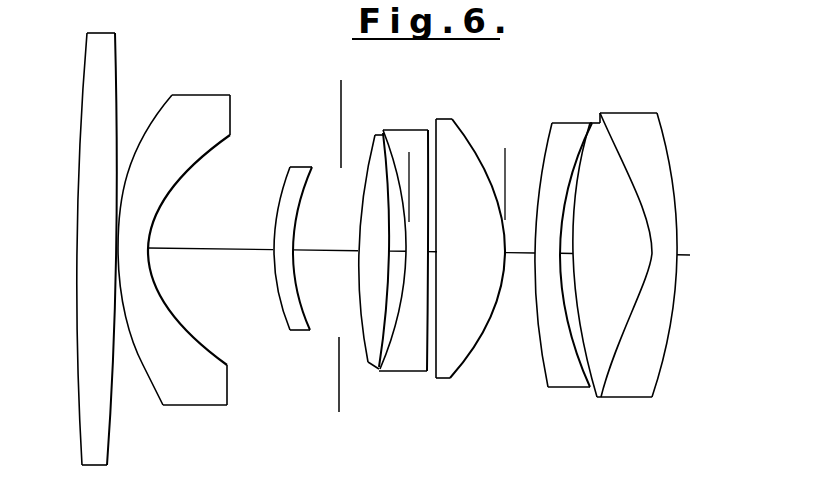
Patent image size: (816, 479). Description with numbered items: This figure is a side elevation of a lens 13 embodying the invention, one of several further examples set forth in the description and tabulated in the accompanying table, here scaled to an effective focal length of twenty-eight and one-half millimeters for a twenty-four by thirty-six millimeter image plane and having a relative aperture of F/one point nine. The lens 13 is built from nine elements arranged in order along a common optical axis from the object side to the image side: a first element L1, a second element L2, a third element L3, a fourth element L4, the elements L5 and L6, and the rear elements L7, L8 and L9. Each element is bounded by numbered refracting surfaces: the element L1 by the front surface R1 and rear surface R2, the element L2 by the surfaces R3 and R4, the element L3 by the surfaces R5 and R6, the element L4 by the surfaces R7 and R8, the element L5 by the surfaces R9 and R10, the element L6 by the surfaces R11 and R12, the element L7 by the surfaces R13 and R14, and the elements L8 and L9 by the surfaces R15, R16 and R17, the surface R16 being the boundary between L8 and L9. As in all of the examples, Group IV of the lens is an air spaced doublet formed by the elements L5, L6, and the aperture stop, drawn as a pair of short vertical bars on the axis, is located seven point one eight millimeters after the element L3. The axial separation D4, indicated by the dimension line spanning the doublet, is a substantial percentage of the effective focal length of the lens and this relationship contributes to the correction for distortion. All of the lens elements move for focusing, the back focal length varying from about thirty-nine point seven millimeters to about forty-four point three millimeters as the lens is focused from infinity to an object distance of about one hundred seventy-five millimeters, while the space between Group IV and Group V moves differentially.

The lens 13 is at (580, 60).
The lens element L1 is at (95, 249).
The lens element L2 is at (174, 236).
The lens element L3 is at (282, 225).
The lens element L4 is at (354, 231).
The lens element L5 is at (396, 255).
The lens element L6 is at (478, 238).
The lens element L7 is at (546, 250).
The lens element L8 is at (635, 260).
The lens element L9 is at (662, 242).
The surface R1 is at (77, 338).
The surface R2 is at (108, 424).
The surface R3 is at (142, 365).
The surface R4 is at (187, 337).
The surface R5 is at (278, 300).
The surface R6 is at (297, 292).
The surface R7 is at (360, 293).
The surface R8 is at (383, 311).
The surface R9 is at (389, 350).
The surface R10 is at (424, 325).
The surface R11 is at (460, 350).
The surface R12 is at (489, 313).
The surface R13 is at (535, 317).
The surface R14 is at (575, 350).
The surface R15 is at (578, 328).
The surface R16 is at (623, 350).
The surface R17 is at (673, 310).
The axial separation D4 is at (505, 160).